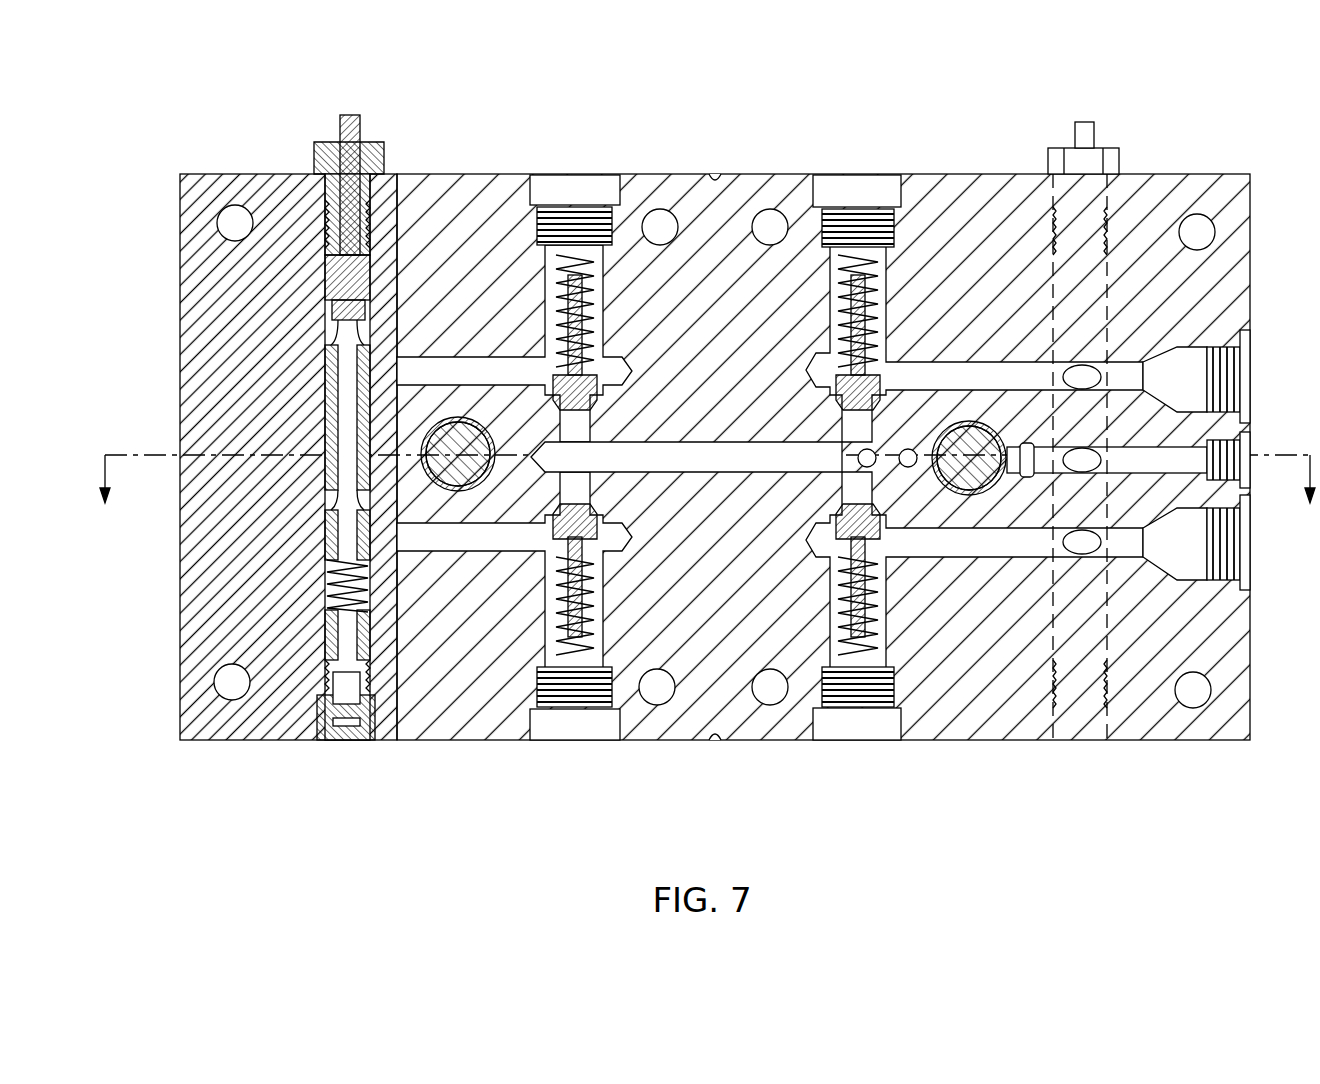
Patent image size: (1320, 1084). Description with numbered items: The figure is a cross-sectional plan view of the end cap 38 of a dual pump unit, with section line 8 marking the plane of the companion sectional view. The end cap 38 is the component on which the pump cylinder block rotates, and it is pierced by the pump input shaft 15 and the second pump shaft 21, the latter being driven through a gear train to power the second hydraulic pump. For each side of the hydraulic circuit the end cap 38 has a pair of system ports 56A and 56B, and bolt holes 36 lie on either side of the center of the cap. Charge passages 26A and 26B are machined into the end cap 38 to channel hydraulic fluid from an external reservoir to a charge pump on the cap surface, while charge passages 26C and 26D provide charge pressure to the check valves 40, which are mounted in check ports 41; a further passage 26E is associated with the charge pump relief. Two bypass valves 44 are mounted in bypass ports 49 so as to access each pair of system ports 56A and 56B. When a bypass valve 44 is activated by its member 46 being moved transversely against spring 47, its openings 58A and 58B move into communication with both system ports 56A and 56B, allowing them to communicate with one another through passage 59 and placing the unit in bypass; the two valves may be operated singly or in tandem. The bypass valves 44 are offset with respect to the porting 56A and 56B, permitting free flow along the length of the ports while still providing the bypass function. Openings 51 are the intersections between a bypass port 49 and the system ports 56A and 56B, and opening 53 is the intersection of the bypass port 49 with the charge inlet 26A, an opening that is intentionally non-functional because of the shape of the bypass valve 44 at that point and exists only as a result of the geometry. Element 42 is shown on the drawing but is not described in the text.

The end cap 38 is at (258, 172).
The section line 8— 8 is at (706, 504).
The alignment notch 42 is at (716, 170).
The bolt holes 36 is at (660, 209).
The passage 59 is at (345, 400).
The bypass valve 44 is at (328, 168).
The member 46 is at (355, 116).
The opening 58A is at (335, 345).
The opening 58B is at (333, 520).
The spring 47 is at (330, 600).
The system port 56A is at (802, 343).
The system port 56B is at (802, 570).
The charge passage 26D is at (686, 457).
The charge passage 26A is at (1205, 460).
The openings 51 is at (1088, 372).
The opening 53 is at (1090, 462).
The check valve 40 is at (580, 176).
The check port 41 is at (560, 295).
The second pump shaft 21 is at (465, 420).
The pump input shaft 15 is at (968, 440).
The passage 26E is at (870, 478).
The charge passage 26C is at (906, 448).
The charge passage 26B is at (1030, 480).
The bypass port 49 is at (1083, 722).